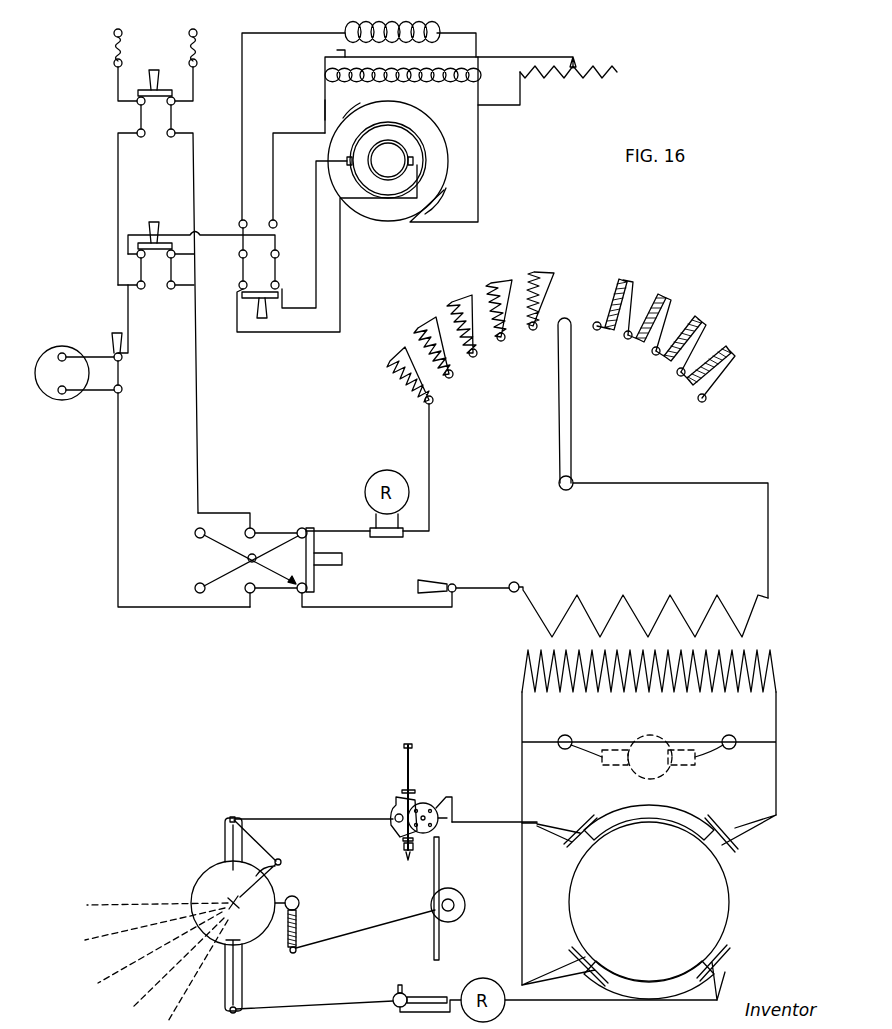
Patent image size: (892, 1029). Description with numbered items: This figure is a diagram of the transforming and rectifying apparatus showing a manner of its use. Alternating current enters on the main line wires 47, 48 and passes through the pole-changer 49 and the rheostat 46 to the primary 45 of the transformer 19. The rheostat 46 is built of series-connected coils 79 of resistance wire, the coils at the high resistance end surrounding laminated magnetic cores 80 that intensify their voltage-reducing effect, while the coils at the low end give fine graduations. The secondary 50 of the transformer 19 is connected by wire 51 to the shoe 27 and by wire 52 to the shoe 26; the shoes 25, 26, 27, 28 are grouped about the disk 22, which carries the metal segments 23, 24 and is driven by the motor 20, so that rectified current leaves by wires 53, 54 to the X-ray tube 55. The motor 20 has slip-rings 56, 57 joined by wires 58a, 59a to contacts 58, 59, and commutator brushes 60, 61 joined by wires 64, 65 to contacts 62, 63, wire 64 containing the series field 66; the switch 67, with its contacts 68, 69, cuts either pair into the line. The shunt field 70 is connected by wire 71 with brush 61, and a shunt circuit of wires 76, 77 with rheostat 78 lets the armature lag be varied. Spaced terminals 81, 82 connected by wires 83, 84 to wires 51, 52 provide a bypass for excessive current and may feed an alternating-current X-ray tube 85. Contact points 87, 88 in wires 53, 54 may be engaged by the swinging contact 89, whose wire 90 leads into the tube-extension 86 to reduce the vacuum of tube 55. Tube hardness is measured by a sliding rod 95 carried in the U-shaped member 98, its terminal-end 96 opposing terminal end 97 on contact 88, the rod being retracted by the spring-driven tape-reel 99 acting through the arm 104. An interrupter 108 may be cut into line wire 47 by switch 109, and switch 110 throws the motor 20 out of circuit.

The transformer 19 is at (649, 660).
The motor 20 is at (470, 145).
The disk 22 is at (729, 900).
The segment 23 is at (664, 812).
The segment 24 is at (630, 970).
The shoe 25 is at (580, 820).
The shoe 26 is at (728, 826).
The shoe 27 is at (570, 966).
The shoe 28 is at (722, 970).
The primary 45 is at (590, 605).
The rheostat 46 is at (663, 458).
The main line wire 47 is at (118, 440).
The main line wire 48 is at (198, 436).
The pole-changer 49 is at (275, 535).
The secondary 50 is at (530, 662).
The wire 51 is at (520, 878).
The wire 52 is at (776, 770).
The wire 53 is at (470, 822).
The wire 54 is at (580, 1002).
The X-ray tube 55 is at (190, 896).
The slip-ring 56 is at (415, 133).
The slip-ring 57 is at (408, 160).
The contact 58 is at (240, 290).
The wire 58a is at (317, 262).
The contact 59 is at (278, 285).
The wire 59a is at (340, 280).
The commutator brush 60 is at (433, 208).
The commutator brush 61 is at (343, 114).
The contact 62 is at (238, 222).
The contact 63 is at (277, 222).
The wire 64 is at (242, 126).
The wire 65 is at (273, 153).
The series field 66 is at (414, 20).
The switch 67 is at (240, 273).
The contact 68 is at (243, 250).
The contact 69 is at (278, 254).
The shunt field 70 is at (437, 83).
The wire 71 is at (325, 100).
The wire 76 is at (332, 49).
The wire 77 is at (520, 102).
The rheostat 78 is at (578, 66).
The coil 79 is at (420, 384).
The magnetic core 80 is at (670, 295).
The terminal 81 is at (596, 725).
The terminal 82 is at (706, 748).
The wire 83 is at (528, 745).
The wire 84 is at (760, 748).
The X-ray tube 85 is at (640, 770).
The tube-extension 86 is at (297, 928).
The contact point 87 is at (446, 808).
The contact point 88 is at (438, 997).
The swinging contact 89 is at (440, 872).
The wire 90 is at (338, 930).
The sliding rod 95 is at (406, 766).
The terminal-end 96 is at (406, 856).
The terminal end 97 is at (397, 988).
The U-shaped member 98 is at (400, 810).
The tape-reel 99 is at (423, 803).
The arm 104 is at (403, 845).
The interrupter 108 is at (48, 355).
The switch 109 is at (127, 383).
The switch 110 is at (137, 266).